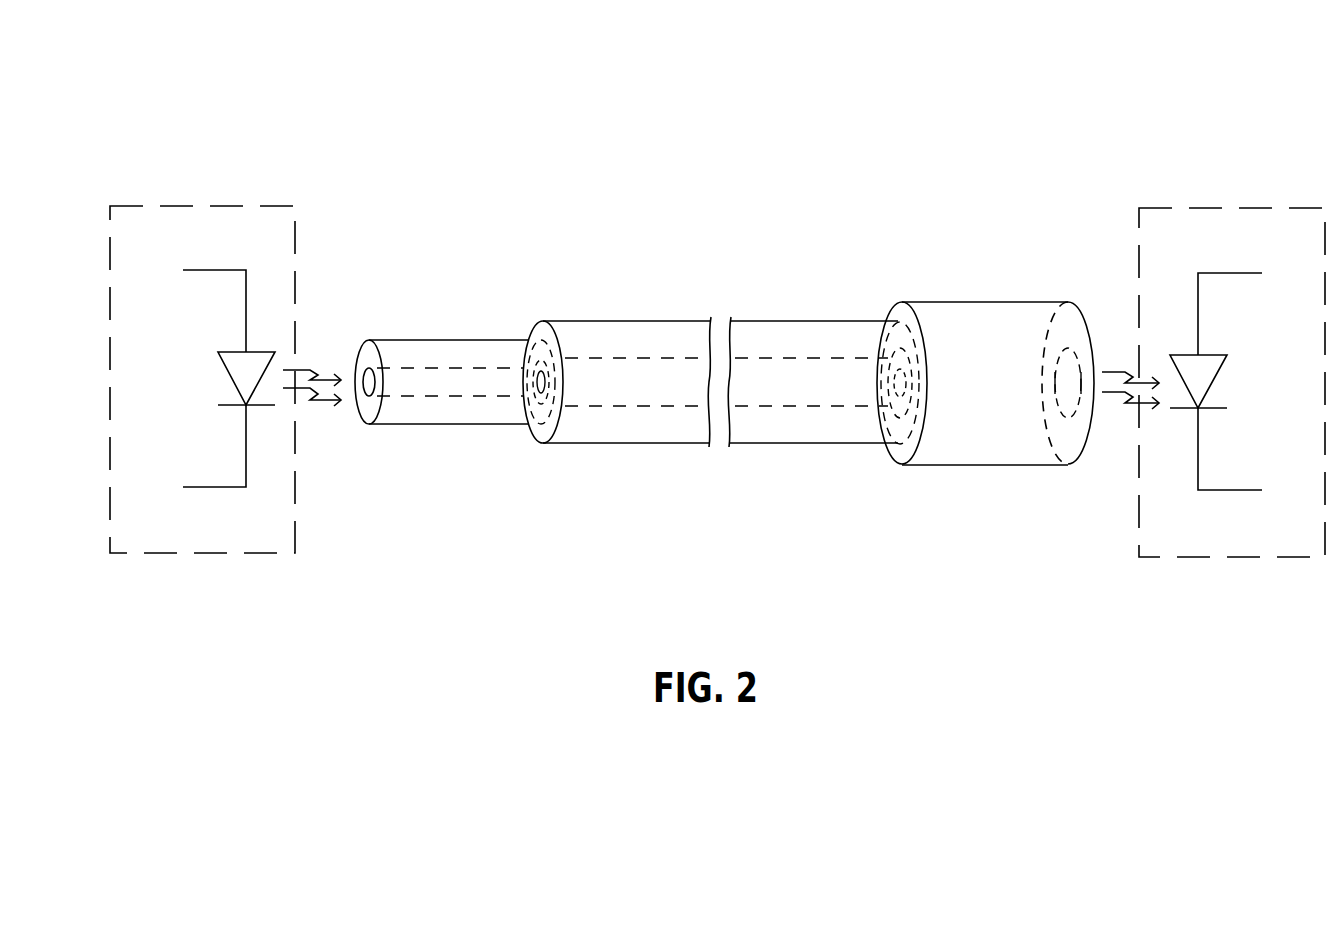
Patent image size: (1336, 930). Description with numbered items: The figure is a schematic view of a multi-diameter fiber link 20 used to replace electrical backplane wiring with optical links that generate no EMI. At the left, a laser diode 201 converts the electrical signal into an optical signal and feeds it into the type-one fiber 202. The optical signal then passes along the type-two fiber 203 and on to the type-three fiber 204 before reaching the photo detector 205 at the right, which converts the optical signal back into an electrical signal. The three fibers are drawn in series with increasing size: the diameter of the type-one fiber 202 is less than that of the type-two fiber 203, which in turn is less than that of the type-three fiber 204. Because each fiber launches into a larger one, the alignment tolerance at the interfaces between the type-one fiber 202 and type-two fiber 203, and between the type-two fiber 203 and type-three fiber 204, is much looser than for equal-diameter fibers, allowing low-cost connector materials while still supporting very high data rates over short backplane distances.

The optical link 20 is at (717, 290).
The laser diode 201 is at (223, 328).
The type-1 fiber 202 is at (399, 328).
The type-2 fiber 203 is at (595, 316).
The type-3 fiber 204 is at (948, 294).
The photo detector 205 is at (1214, 340).